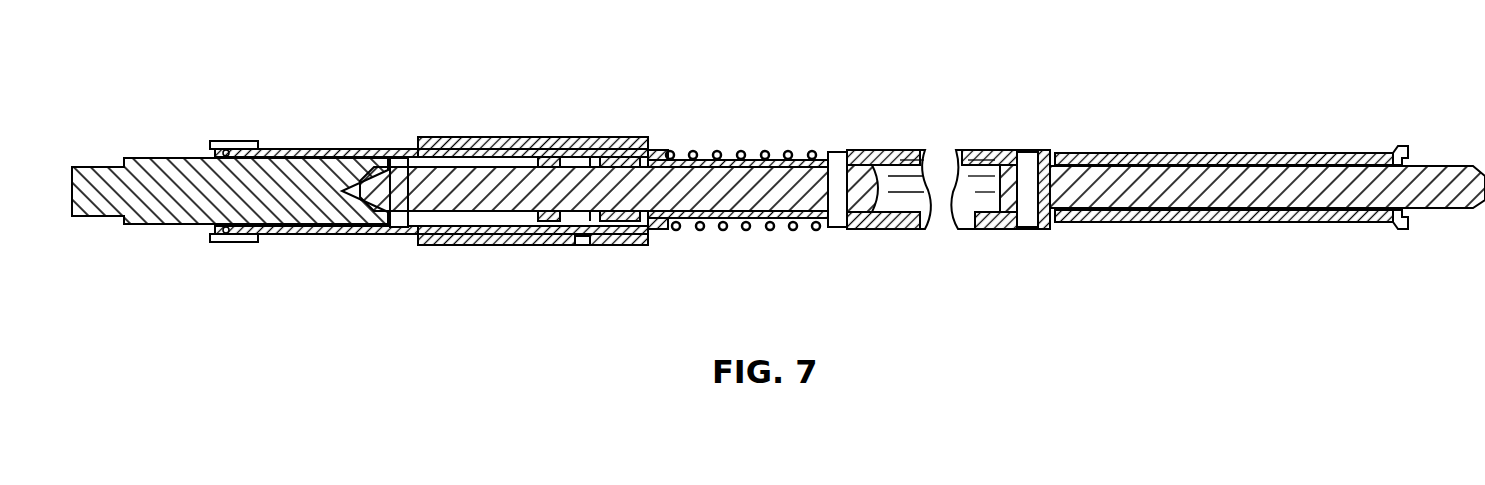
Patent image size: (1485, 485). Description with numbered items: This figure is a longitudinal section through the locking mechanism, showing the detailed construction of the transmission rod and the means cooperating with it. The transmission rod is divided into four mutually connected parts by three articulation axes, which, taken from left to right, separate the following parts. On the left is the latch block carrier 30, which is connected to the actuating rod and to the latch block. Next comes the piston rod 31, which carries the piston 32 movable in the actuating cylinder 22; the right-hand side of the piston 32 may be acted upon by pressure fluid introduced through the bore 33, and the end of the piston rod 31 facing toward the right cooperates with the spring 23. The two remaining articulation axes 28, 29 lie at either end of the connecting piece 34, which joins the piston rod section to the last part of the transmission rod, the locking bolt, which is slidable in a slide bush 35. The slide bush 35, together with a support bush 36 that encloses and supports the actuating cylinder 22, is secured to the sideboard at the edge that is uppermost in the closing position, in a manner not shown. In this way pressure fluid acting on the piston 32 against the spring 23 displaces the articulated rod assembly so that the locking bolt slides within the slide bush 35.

The actuating cylinder 22 is at (465, 234).
The spring 23 is at (717, 152).
The articulation axis 28 is at (843, 229).
The articulation axis 29 is at (1023, 229).
The latch block carrier 30 is at (173, 228).
The piston rod 31 is at (476, 183).
The piston 32 is at (548, 160).
The bore 33 is at (585, 240).
The connecting piece 34 is at (957, 229).
The slide bush 35 is at (1128, 157).
The support bush 36 is at (605, 147).